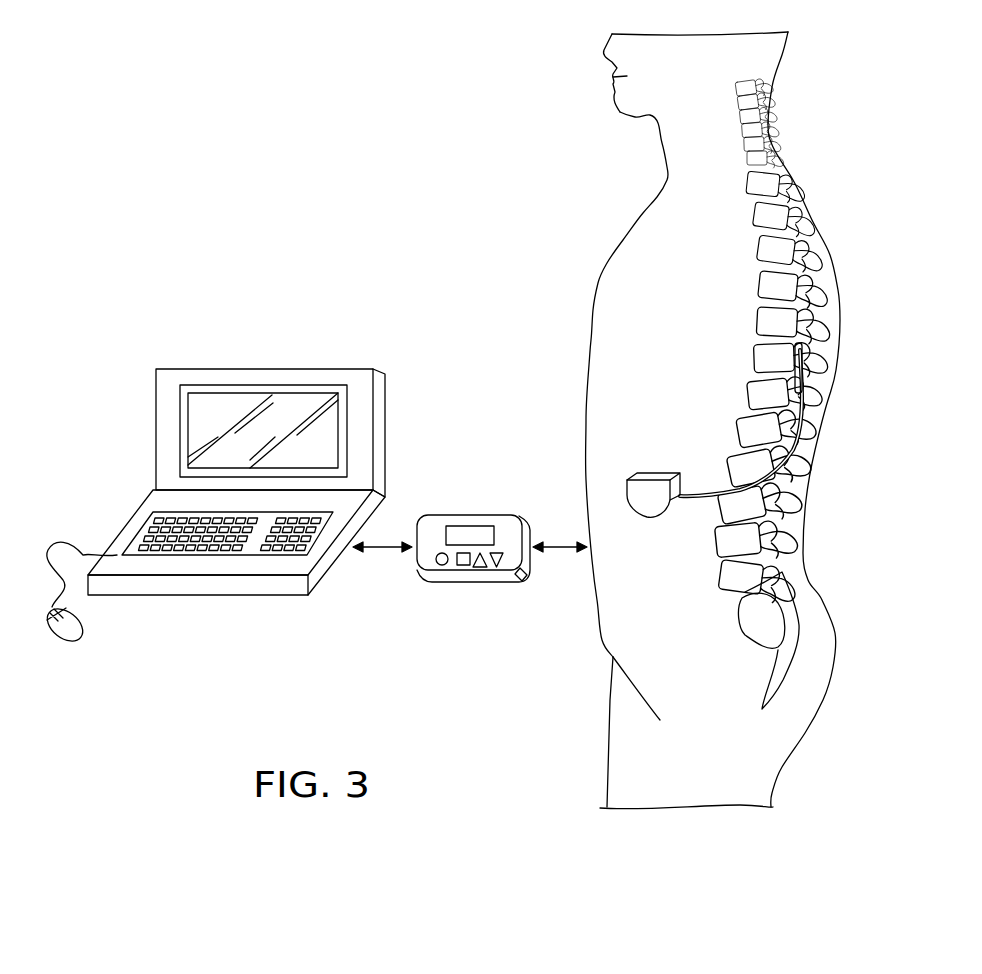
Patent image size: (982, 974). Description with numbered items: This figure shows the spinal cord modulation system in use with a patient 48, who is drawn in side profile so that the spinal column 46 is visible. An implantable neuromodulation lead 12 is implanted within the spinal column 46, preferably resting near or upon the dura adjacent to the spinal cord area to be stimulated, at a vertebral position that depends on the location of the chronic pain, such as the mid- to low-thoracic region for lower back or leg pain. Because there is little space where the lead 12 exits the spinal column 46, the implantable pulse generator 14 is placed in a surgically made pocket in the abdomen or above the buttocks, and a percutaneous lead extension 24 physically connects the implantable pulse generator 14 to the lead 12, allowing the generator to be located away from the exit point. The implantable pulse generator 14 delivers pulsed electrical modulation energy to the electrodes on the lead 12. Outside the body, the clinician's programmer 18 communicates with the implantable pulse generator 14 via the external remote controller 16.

The implantable neuromodulation lead 12 is at (805, 367).
The implantable pulse generator 14 is at (653, 507).
The external remote controller 16 is at (491, 500).
The clinician's programmer 18 is at (246, 363).
The percutaneous lead extension 24 is at (800, 443).
The spinal column 46 is at (760, 345).
The patient 48 is at (597, 283).